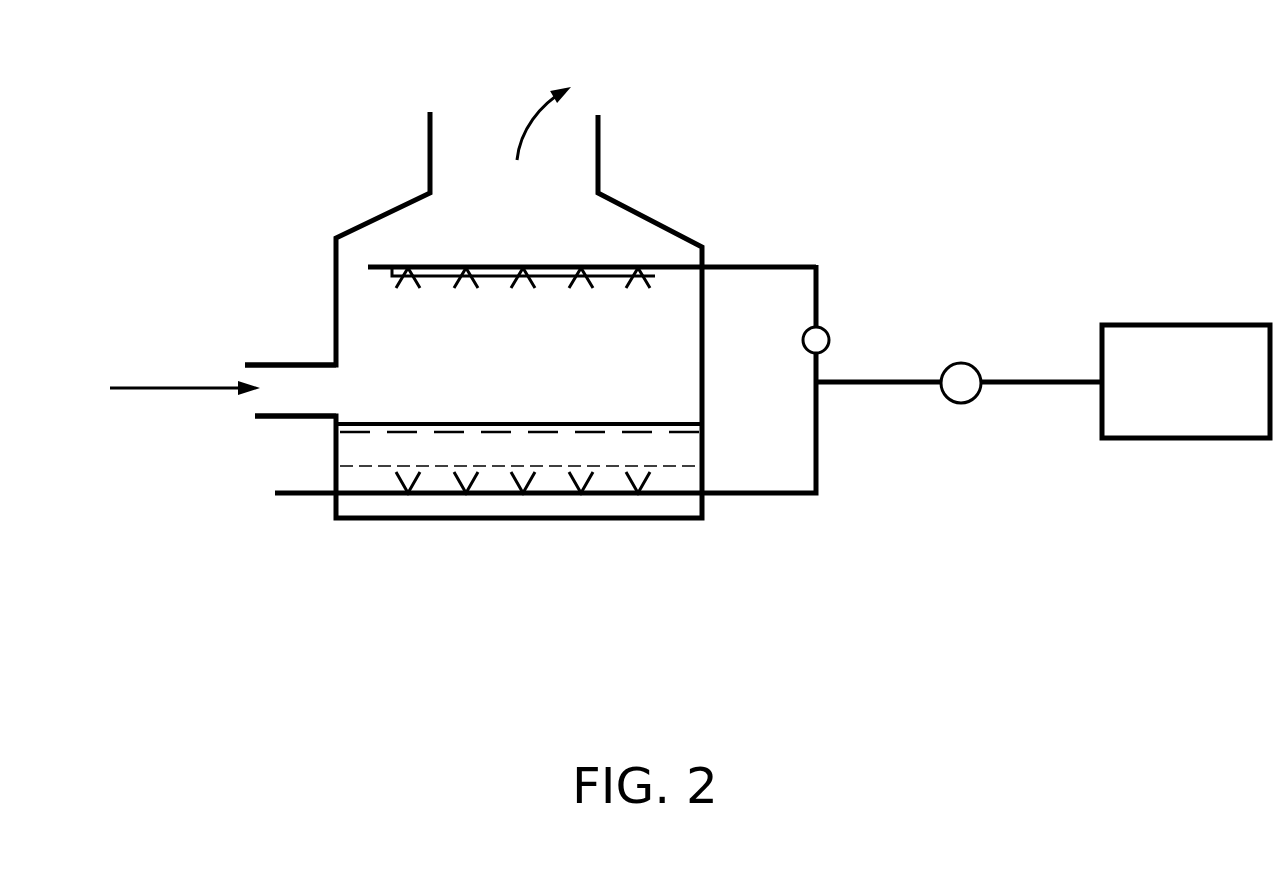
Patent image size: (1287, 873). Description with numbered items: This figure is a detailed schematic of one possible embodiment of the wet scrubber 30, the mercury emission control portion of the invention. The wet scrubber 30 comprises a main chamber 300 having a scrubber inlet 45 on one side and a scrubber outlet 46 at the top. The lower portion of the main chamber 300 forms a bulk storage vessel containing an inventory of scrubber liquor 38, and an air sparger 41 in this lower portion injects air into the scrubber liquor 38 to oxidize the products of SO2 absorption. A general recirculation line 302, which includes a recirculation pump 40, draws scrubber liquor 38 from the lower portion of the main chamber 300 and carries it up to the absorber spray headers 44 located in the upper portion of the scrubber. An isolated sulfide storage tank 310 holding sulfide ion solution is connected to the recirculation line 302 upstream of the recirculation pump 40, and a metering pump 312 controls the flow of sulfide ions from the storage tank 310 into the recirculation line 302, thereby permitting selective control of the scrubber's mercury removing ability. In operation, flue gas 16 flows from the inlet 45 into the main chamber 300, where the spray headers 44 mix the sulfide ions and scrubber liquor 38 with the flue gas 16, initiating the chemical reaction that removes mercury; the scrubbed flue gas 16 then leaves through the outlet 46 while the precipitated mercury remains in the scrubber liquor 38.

The flue gas 16 is at (183, 385).
The wet scrubber 30 is at (762, 140).
The scrubber outlet 46 is at (503, 213).
The absorber spray headers 44 is at (600, 263).
The general recirculation line 302 is at (820, 262).
The recirculation pump 40 is at (828, 328).
The scrubber inlet 45 is at (278, 405).
The main chamber 300 is at (496, 366).
The scrubber liquor 38 is at (508, 468).
The air sparger 41 is at (363, 494).
The metering pump 312 is at (977, 398).
The sulfide storage tank 310 is at (1163, 395).